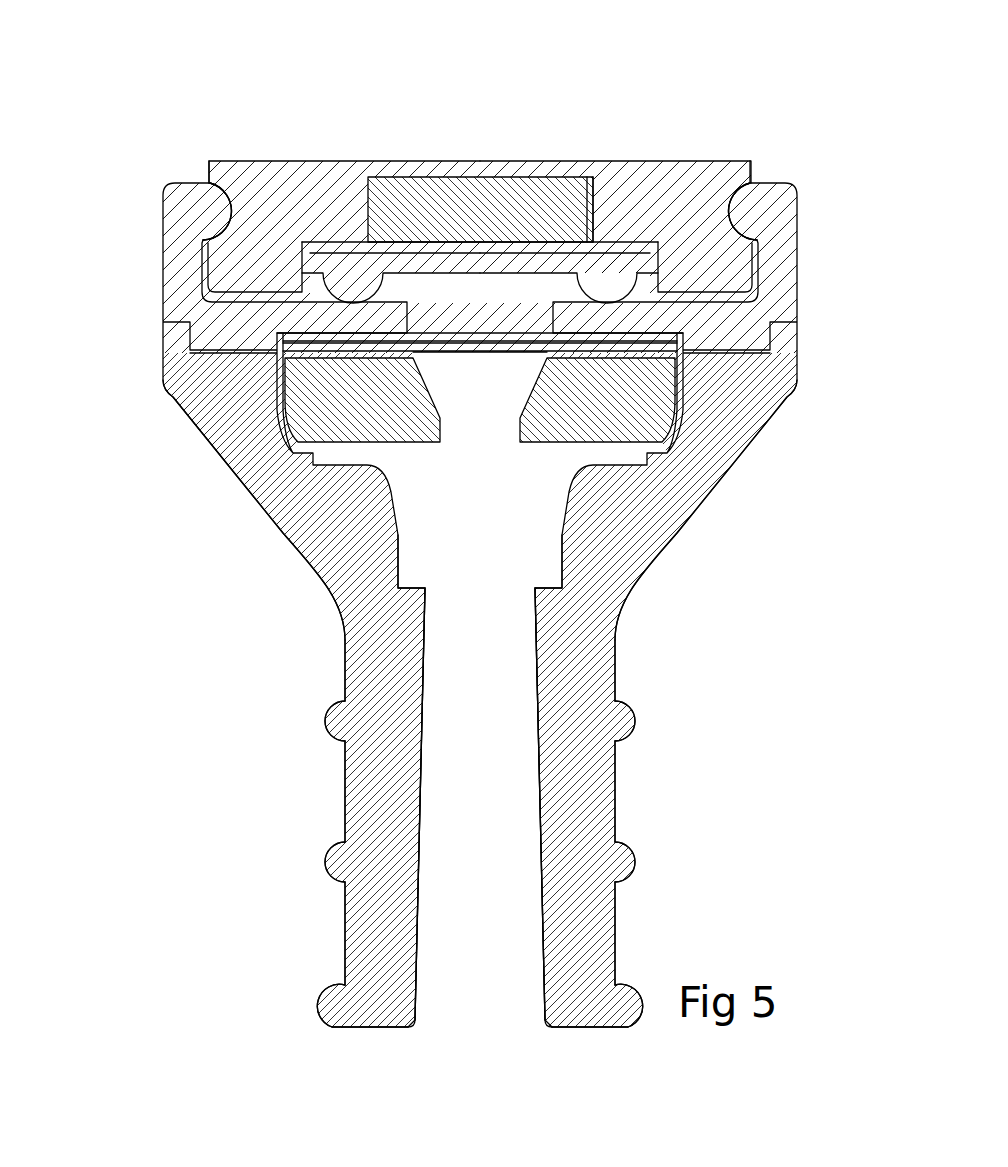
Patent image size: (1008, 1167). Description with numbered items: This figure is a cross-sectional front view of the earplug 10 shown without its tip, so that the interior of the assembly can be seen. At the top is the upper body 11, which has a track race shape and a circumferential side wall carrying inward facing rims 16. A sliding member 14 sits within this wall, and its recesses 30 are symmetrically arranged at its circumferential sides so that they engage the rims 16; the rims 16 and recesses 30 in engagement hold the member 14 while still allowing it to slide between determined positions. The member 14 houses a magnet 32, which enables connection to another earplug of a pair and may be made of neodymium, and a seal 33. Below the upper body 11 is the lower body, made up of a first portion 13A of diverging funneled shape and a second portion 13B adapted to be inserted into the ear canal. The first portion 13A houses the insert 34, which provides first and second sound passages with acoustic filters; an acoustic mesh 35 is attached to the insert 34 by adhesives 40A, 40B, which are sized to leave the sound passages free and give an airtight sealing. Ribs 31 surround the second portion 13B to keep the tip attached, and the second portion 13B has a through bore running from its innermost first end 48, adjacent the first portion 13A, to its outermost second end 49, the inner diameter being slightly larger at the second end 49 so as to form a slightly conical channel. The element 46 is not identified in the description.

The earplug 10 is at (92, 201).
The upper body 11 is at (780, 297).
The first portion of the lower body 13A is at (655, 505).
The second portion of the lower body 13B is at (580, 792).
The member 14 is at (663, 182).
The rims 16 is at (217, 213).
The recesses 30 is at (231, 233).
The ribs 31 is at (327, 1005).
The magnet 32 is at (417, 210).
The seal 33 is at (350, 270).
The insert 34 is at (308, 413).
The acoustic mesh 35 is at (447, 348).
The adhesive 40A is at (665, 332).
The adhesive 40B is at (672, 362).
The cap wall 46 is at (627, 203).
The first end 48 is at (476, 588).
The second end 49 is at (478, 1035).